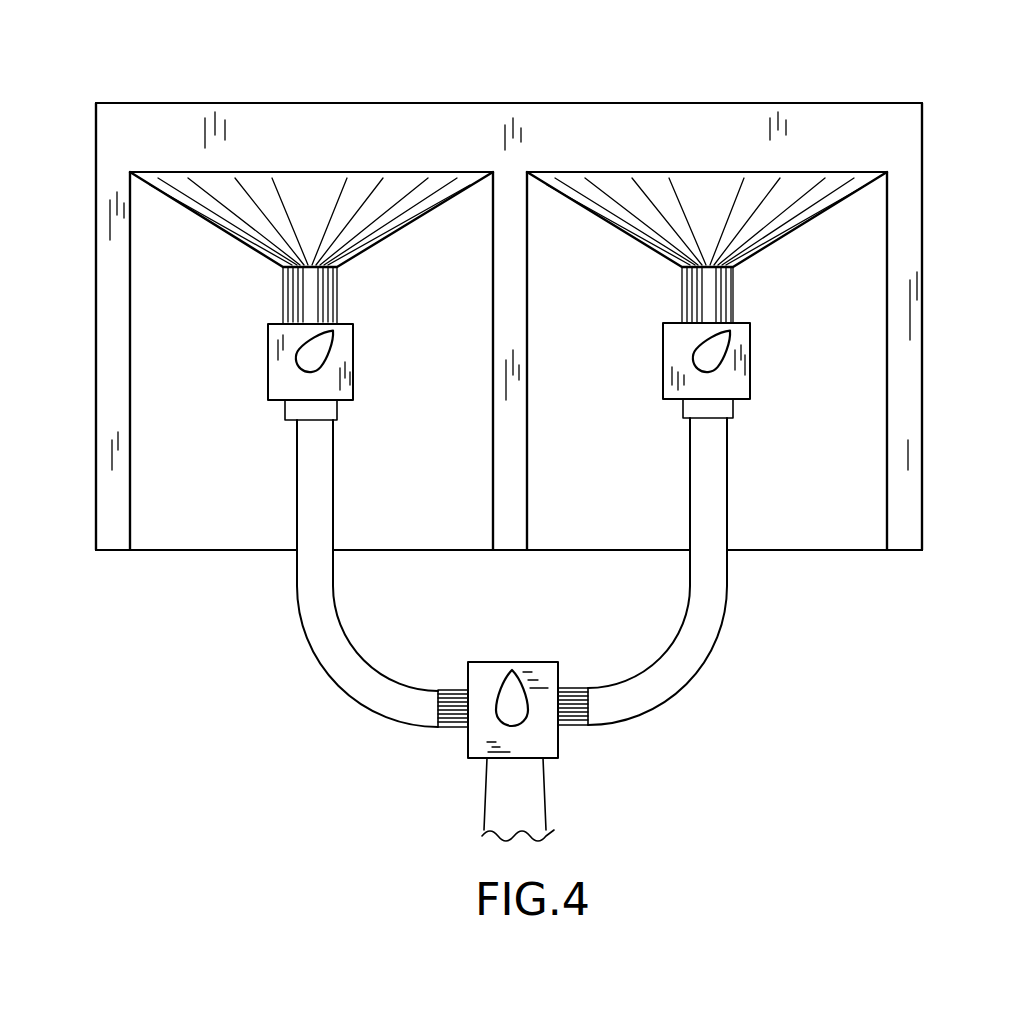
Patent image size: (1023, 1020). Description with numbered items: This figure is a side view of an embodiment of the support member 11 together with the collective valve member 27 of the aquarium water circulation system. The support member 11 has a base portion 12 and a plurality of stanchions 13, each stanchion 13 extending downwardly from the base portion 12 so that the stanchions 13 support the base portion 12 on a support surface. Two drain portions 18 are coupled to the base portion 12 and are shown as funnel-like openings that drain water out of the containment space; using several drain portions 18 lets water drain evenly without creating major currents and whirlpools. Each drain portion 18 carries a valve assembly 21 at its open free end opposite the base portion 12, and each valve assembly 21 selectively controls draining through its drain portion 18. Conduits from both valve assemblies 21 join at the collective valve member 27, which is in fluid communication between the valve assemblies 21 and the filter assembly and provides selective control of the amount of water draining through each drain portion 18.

The support member 11 is at (922, 103).
The base portion 12 is at (720, 130).
The stanchions 13 is at (115, 380).
The drain portions 18 is at (218, 213).
The valve assembly 21 is at (270, 425).
The collective valve member 27 is at (547, 742).